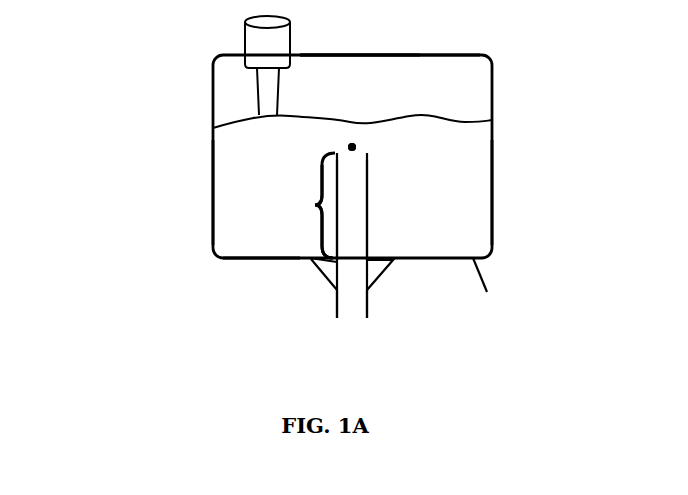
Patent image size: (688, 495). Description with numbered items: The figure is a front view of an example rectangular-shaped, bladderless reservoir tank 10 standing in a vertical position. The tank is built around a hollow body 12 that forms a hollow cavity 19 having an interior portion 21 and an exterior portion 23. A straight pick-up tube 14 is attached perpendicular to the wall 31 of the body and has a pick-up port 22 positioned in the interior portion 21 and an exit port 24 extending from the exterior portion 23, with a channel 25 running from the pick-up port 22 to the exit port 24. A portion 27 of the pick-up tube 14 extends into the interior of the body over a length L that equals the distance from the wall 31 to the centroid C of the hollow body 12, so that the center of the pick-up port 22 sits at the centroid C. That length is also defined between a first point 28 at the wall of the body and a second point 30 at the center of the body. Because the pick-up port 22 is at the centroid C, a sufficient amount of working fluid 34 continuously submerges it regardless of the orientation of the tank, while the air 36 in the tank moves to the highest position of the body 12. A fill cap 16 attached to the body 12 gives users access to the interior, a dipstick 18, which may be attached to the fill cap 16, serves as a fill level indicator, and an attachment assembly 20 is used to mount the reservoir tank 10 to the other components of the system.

The reservoir tank 10 is at (183, 147).
The hollow body 12 is at (210, 205).
The pick-up tube 14 is at (370, 312).
The fill cap 16 is at (243, 33).
The dipstick 18 is at (258, 88).
The hollow cavity 19 is at (373, 78).
The attachment assembly 20 is at (322, 275).
The interior portion 21 is at (425, 88).
The pick-up port 22 is at (344, 140).
The exterior portion 23 is at (230, 262).
The exit port 24 is at (350, 322).
The channel 25 is at (352, 181).
The portion of pick-up tube 27 is at (367, 228).
The first point 28 is at (330, 258).
The second point 30 is at (330, 152).
The wall 31 is at (487, 288).
The working fluid 34 is at (470, 195).
The air 36 is at (468, 84).
The centroid C is at (358, 146).
The length L is at (318, 205).